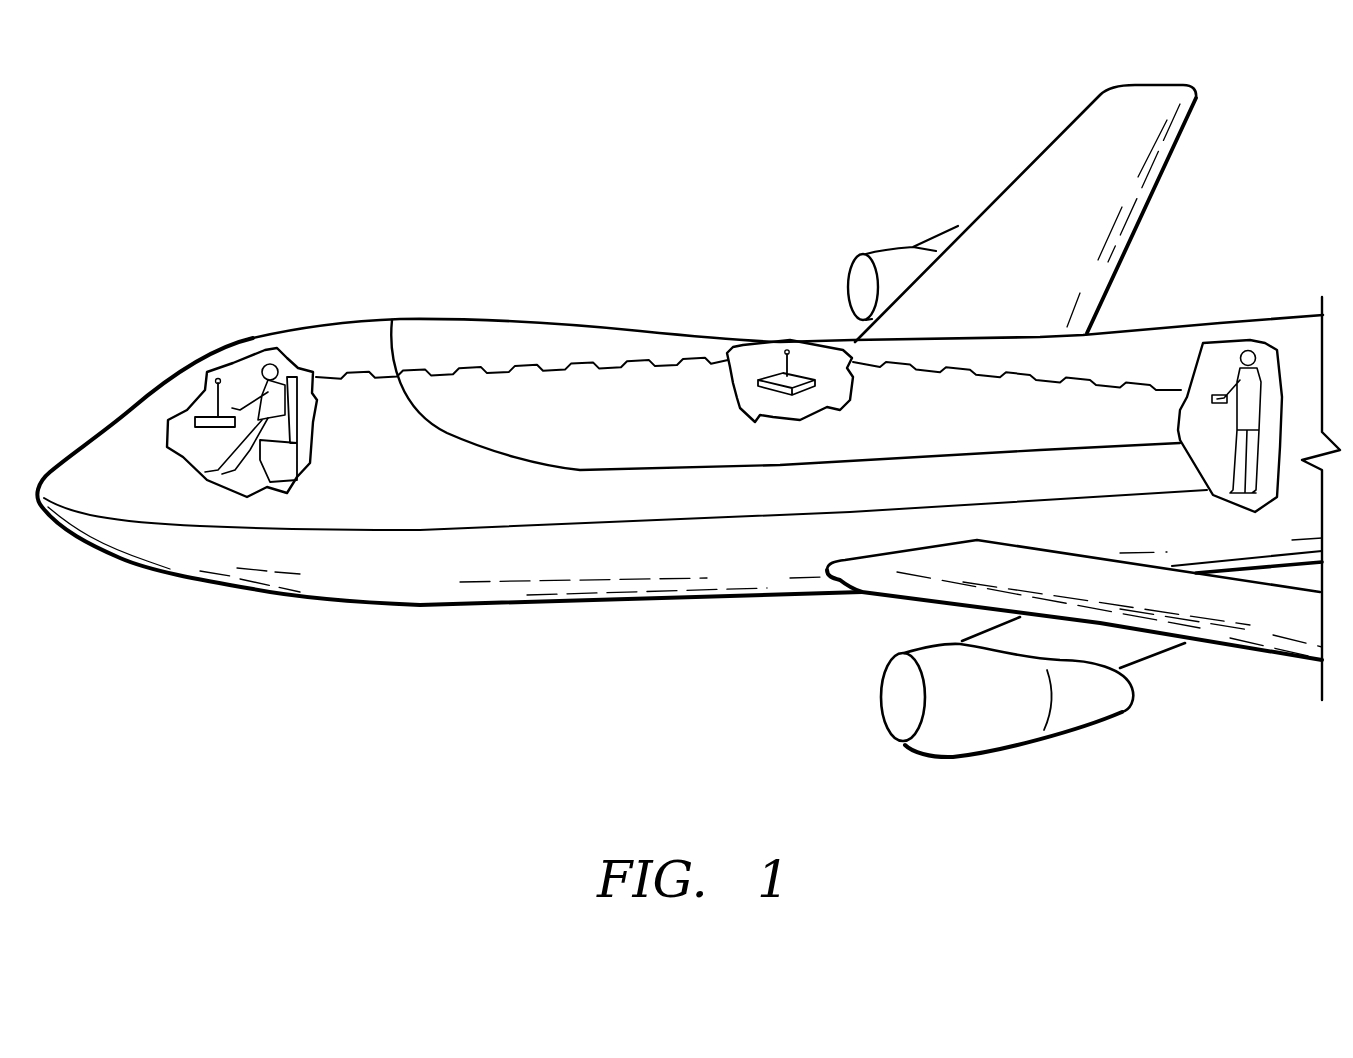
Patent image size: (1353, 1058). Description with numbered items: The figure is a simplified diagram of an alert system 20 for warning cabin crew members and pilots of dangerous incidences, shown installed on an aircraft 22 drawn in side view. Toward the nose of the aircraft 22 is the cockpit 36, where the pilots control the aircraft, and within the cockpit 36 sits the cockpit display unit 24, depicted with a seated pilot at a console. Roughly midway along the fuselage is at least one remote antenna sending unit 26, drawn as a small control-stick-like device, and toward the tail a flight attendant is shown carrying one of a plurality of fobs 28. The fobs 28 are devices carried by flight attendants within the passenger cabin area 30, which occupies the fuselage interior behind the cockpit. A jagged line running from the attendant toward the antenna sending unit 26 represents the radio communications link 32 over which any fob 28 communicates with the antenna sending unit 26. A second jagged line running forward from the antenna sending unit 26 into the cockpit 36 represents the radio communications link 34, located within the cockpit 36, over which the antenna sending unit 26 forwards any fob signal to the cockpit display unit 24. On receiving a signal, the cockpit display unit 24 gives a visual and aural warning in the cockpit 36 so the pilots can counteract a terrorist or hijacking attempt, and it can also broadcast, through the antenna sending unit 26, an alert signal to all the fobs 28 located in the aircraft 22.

The alert system 20 is at (218, 98).
The aircraft 22 is at (441, 303).
The cockpit display unit 24 is at (203, 428).
The remote antenna sending unit 26 is at (730, 395).
The fobs 28 is at (1212, 396).
The passenger cabin area 30 is at (825, 444).
The radio communications link 32 is at (973, 372).
The radio communications link 34 is at (547, 370).
The cockpit 36 is at (252, 322).